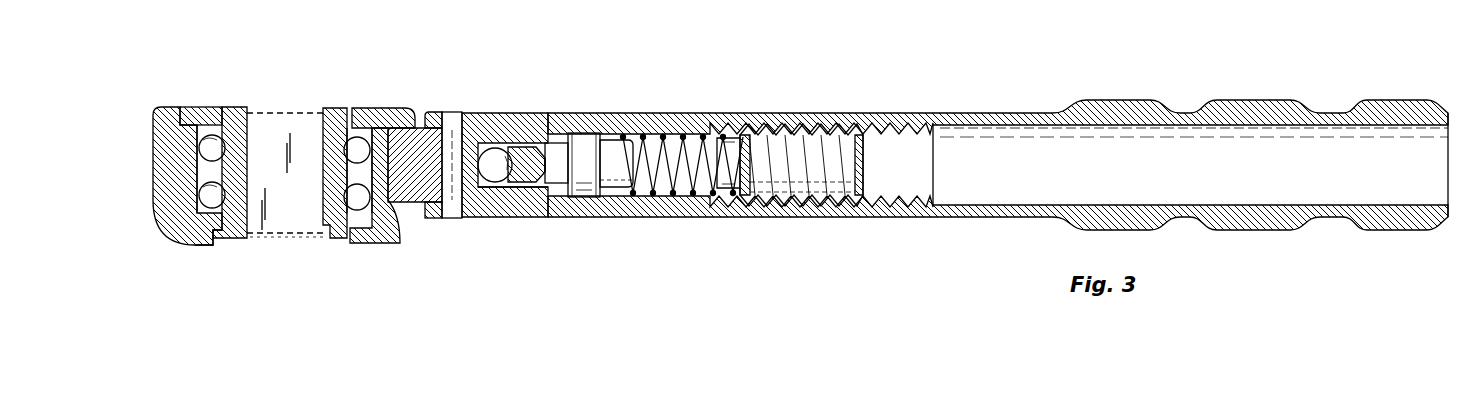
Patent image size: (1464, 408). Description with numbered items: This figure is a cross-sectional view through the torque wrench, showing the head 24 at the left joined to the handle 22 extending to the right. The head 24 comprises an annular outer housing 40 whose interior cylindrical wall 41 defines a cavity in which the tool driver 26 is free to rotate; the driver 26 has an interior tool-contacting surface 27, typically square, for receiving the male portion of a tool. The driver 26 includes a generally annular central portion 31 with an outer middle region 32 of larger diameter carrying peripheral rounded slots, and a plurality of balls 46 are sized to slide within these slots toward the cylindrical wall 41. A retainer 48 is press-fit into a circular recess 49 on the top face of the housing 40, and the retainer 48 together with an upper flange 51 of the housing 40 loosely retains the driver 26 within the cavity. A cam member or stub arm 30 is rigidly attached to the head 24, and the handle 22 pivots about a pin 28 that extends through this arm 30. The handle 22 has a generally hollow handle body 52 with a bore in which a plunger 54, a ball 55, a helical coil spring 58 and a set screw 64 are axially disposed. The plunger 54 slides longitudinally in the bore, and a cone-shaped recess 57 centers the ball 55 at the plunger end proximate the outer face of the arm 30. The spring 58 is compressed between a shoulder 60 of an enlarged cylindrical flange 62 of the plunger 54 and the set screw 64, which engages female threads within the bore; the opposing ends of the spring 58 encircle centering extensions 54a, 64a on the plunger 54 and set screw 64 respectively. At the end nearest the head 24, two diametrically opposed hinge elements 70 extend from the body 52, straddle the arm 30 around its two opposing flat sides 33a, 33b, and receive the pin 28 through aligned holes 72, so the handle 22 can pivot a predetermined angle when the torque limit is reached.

The handle 22 is at (910, 80).
The head 24 is at (263, 70).
The tool driver 26 is at (243, 247).
The interior tool-contacting surface 27 is at (322, 220).
The pin 28 is at (453, 110).
The cam member or stub arm 30 is at (400, 194).
The central portion 31 is at (320, 123).
The outer middle region 32 is at (195, 165).
The flat side 33a is at (494, 143).
The flat side 33b is at (493, 207).
The annular outer housing 40 is at (158, 200).
The interior cylindrical wall 41 is at (198, 137).
The balls 46 is at (198, 143).
The retainer 48 is at (362, 110).
The circular recess 49 is at (387, 127).
The upper flange 51 is at (213, 245).
The handle body 52 is at (983, 113).
The plunger 54 is at (577, 131).
The centering extension 54a is at (617, 150).
The ball 55 is at (513, 178).
The cone-shaped recess 57 is at (563, 131).
The helical coil spring 58 is at (682, 194).
The shoulder 60 is at (617, 194).
The enlarged cylindrical flange 62 is at (587, 194).
The set screw 64 is at (808, 137).
The centering extension 64a is at (732, 147).
The hinge elements 70 is at (440, 110).
The aligned holes 72 is at (478, 121).